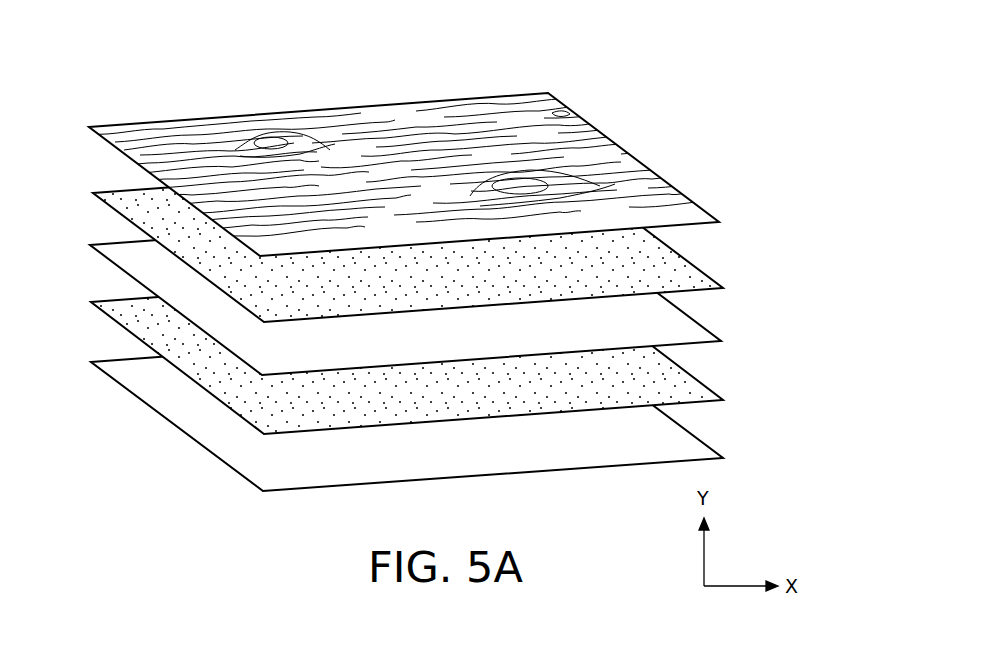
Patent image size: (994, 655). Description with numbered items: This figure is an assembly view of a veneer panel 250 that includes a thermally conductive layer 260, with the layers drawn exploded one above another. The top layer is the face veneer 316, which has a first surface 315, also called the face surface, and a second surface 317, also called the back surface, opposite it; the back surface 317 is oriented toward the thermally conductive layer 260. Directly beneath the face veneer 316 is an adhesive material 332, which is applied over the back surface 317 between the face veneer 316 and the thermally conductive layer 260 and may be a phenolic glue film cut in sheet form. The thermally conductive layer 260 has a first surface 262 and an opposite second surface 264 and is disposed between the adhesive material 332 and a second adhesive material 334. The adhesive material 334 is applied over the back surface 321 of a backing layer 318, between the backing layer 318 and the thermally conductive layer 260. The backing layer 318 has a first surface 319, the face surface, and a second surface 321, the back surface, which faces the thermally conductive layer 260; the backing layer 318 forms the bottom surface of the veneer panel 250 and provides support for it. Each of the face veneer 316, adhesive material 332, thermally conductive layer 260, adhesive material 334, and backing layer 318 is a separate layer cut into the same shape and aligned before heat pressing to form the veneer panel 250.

The veneer panel 250 is at (136, 76).
The first surface 315 is at (433, 118).
The face veneer 316 is at (642, 162).
The second surface 317 is at (112, 143).
The adhesive material 332 is at (681, 256).
The thermally conductive layer 260 is at (693, 318).
The first surface 262 is at (499, 343).
The second surface 264 is at (115, 266).
The adhesive material 334 is at (695, 378).
The backing layer 318 is at (704, 443).
The first surface 319 is at (225, 463).
The second surface 321 is at (535, 460).